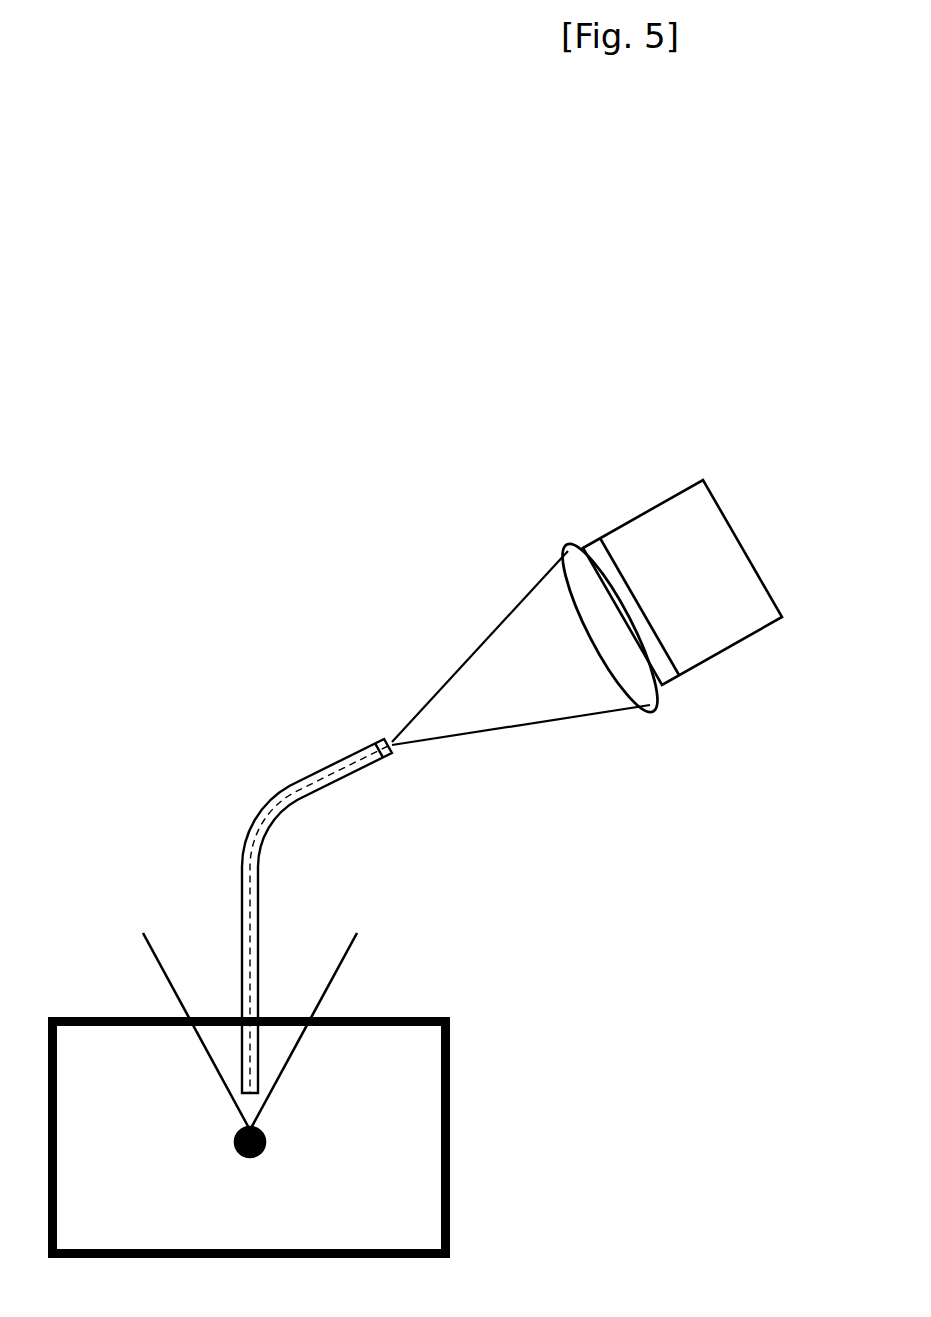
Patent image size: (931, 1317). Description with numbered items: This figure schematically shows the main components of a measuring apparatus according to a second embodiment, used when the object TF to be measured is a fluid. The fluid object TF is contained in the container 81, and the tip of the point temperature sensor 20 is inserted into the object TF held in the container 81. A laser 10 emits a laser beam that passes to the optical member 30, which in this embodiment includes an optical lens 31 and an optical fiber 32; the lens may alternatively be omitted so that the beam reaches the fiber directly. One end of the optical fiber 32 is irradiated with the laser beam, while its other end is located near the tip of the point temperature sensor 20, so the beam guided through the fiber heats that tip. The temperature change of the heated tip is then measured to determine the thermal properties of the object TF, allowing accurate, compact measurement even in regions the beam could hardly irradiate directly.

The laser 10 is at (735, 550).
The point temperature sensor 20 is at (150, 948).
The optical member 30 is at (318, 613).
The optical lens 31 is at (566, 552).
The optical fiber 32 is at (342, 760).
The container 81 is at (450, 1147).
The object to be measured TF is at (397, 1207).